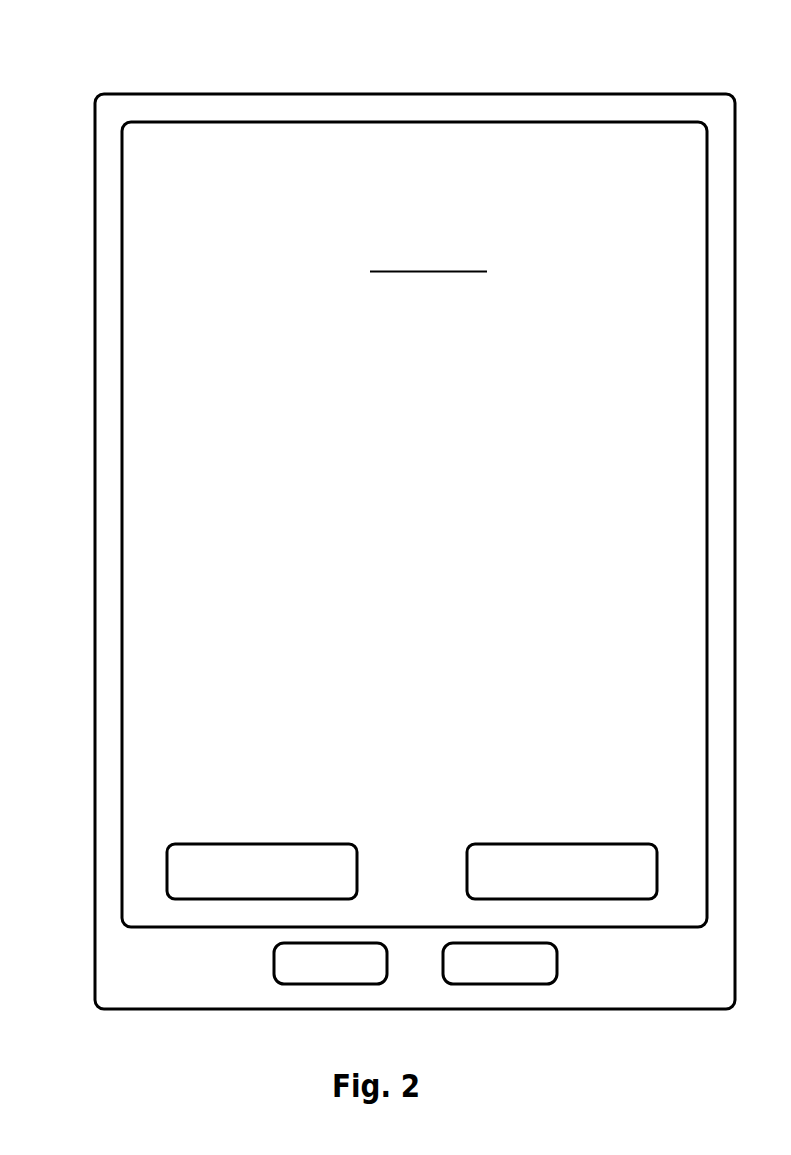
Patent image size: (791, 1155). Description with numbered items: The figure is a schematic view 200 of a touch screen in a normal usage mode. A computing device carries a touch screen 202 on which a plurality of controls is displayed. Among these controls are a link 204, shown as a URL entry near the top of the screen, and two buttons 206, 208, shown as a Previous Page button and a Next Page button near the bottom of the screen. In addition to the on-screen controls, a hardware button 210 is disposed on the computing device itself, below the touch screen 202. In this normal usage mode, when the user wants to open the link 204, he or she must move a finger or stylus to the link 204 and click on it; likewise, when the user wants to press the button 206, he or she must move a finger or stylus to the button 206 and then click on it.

The schematic view 200 is at (248, 47).
The touch screen 202 is at (112, 166).
The link 204 is at (253, 224).
The button 206 is at (207, 816).
The button 208 is at (510, 816).
The hardware button 210 is at (219, 974).